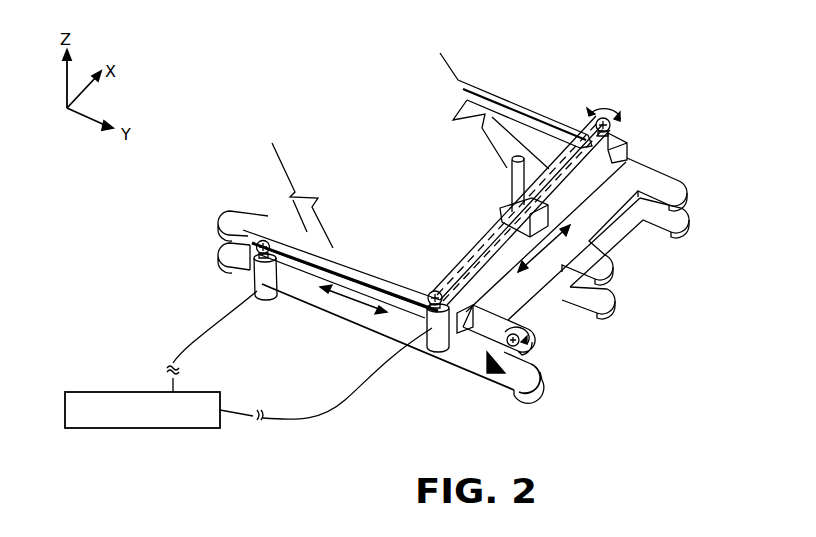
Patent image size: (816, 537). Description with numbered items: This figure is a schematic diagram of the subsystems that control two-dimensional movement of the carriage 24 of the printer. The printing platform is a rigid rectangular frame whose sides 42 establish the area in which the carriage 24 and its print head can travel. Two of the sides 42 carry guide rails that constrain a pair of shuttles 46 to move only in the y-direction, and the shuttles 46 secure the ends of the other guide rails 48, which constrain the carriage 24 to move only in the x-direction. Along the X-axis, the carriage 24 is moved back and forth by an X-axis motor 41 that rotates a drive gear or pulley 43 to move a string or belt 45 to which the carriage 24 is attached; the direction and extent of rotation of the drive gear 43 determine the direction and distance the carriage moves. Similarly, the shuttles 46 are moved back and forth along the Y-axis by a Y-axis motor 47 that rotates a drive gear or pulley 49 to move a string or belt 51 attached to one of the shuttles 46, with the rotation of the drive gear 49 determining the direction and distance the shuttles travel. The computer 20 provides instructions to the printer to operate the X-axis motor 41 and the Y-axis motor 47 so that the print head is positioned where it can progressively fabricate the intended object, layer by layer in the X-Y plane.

The computer 20 is at (100, 392).
The carriage 24 is at (500, 213).
The X-axis motor 41 is at (435, 343).
The sides 42 is at (268, 205).
The drive gear or pulley 43 is at (432, 292).
The string or belt 45 is at (470, 250).
The shuttles 46 is at (628, 148).
The Y-axis motor 47 is at (276, 300).
The other guide rails 48 is at (590, 199).
The drive gear or pulley 49 is at (258, 247).
The string or belt 51 is at (372, 282).